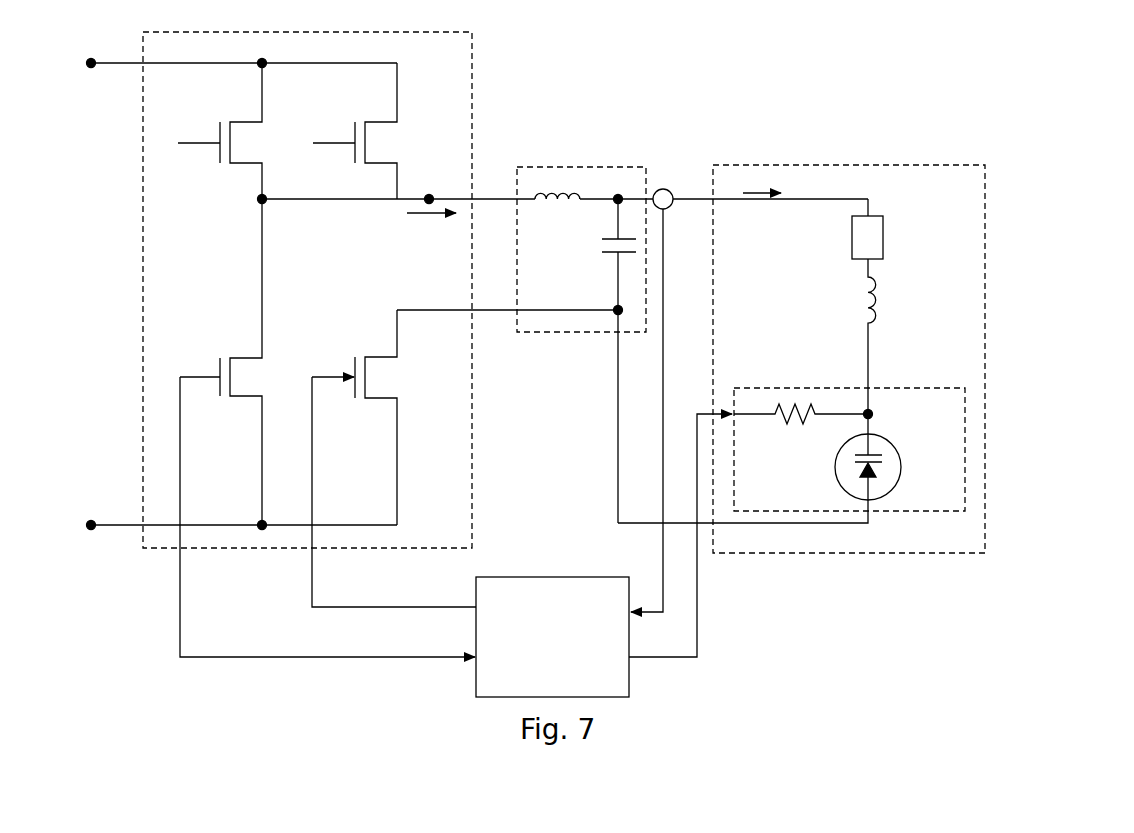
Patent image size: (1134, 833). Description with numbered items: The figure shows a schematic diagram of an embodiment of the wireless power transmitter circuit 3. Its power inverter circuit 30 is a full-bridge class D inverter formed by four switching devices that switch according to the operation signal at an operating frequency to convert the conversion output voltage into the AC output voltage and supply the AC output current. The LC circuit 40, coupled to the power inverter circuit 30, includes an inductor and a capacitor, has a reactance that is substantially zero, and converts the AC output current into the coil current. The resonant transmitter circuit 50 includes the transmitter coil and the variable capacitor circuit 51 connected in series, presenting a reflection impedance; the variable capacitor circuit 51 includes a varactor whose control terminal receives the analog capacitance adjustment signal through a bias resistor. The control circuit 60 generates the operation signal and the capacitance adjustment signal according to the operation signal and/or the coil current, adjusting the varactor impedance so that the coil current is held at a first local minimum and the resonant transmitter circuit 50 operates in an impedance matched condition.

The wireless power transmitter circuit 3 is at (898, 71).
The power inverter circuit 30 is at (459, 67).
The LC circuit 40 is at (632, 167).
The resonant transmitter circuit 50 is at (843, 165).
The variable capacitor circuit 51 is at (756, 511).
The control circuit 60 is at (565, 682).